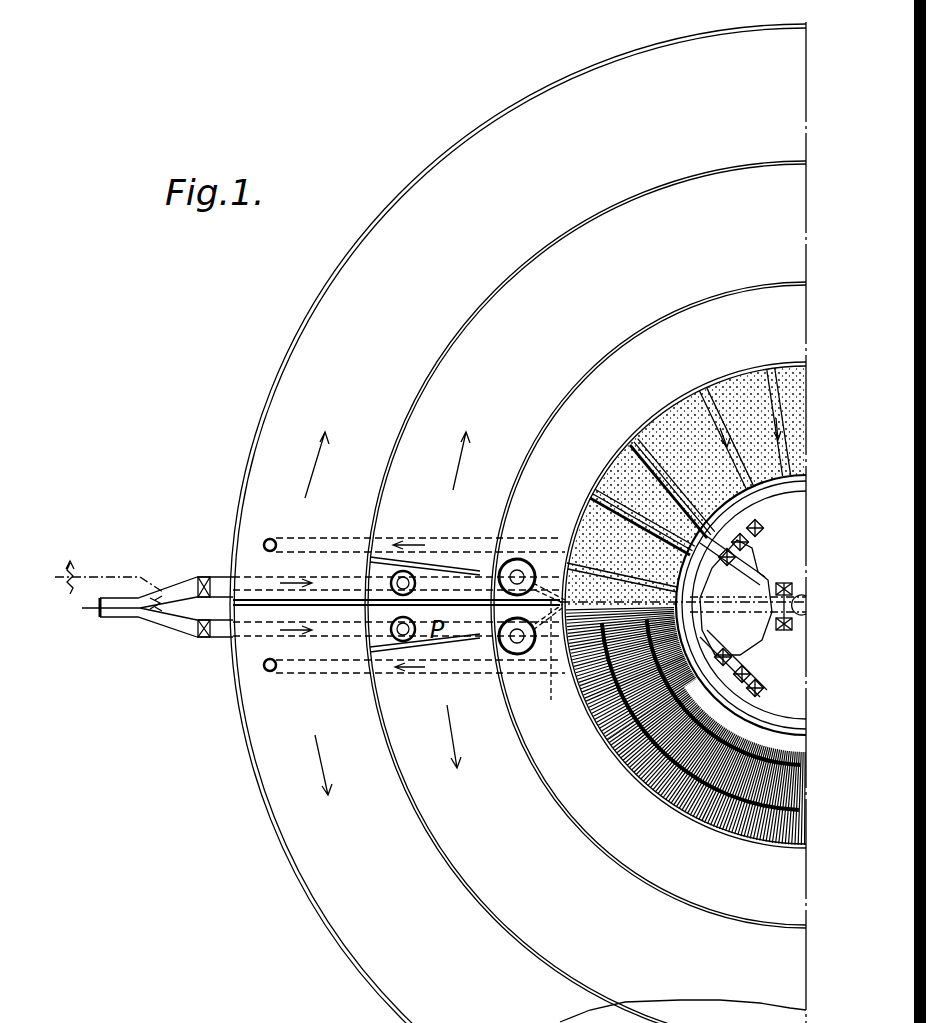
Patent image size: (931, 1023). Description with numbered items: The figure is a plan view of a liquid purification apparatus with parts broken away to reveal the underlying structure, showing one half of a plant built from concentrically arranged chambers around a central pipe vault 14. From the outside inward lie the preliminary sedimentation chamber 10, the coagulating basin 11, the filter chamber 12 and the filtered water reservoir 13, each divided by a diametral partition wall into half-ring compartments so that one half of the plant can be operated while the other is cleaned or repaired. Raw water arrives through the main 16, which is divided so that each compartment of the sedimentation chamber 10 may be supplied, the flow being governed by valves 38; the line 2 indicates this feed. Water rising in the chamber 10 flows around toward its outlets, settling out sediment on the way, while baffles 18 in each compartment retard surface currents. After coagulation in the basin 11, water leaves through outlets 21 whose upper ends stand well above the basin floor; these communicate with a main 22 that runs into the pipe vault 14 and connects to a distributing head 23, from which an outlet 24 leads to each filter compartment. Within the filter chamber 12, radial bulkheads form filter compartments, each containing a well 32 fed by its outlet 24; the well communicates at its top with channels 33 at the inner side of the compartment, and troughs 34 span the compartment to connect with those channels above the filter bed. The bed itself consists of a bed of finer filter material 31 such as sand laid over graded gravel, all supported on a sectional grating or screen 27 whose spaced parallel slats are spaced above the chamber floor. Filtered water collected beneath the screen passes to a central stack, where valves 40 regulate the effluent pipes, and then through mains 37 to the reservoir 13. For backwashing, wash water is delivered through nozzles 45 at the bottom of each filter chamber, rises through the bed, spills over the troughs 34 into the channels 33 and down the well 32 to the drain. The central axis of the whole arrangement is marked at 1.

The central shaft / axis 1 is at (808, 605).
The feed line 2 is at (96, 577).
The preliminary sedimentation chamber 10 is at (440, 415).
The coagulating basin 11 is at (546, 516).
The filter chamber 12 is at (750, 372).
The filtered water reservoir 13 is at (347, 840).
The central pipe vault 14 is at (758, 512).
The main 16 is at (118, 618).
The baffles 18 is at (440, 558).
The outlets 21 is at (510, 558).
The main 22 is at (551, 700).
The distributing head 23 is at (760, 604).
The outlet 24 is at (717, 663).
The grating or screen 27 is at (693, 803).
The bed of finer filter material 31 is at (660, 420).
The well 32 is at (742, 700).
The channels 33 is at (741, 605).
The troughs 34 is at (602, 500).
The mains 37 is at (314, 542).
The valves 38 is at (203, 577).
The valves 40 is at (770, 580).
The nozzles or outlets 45 is at (675, 400).